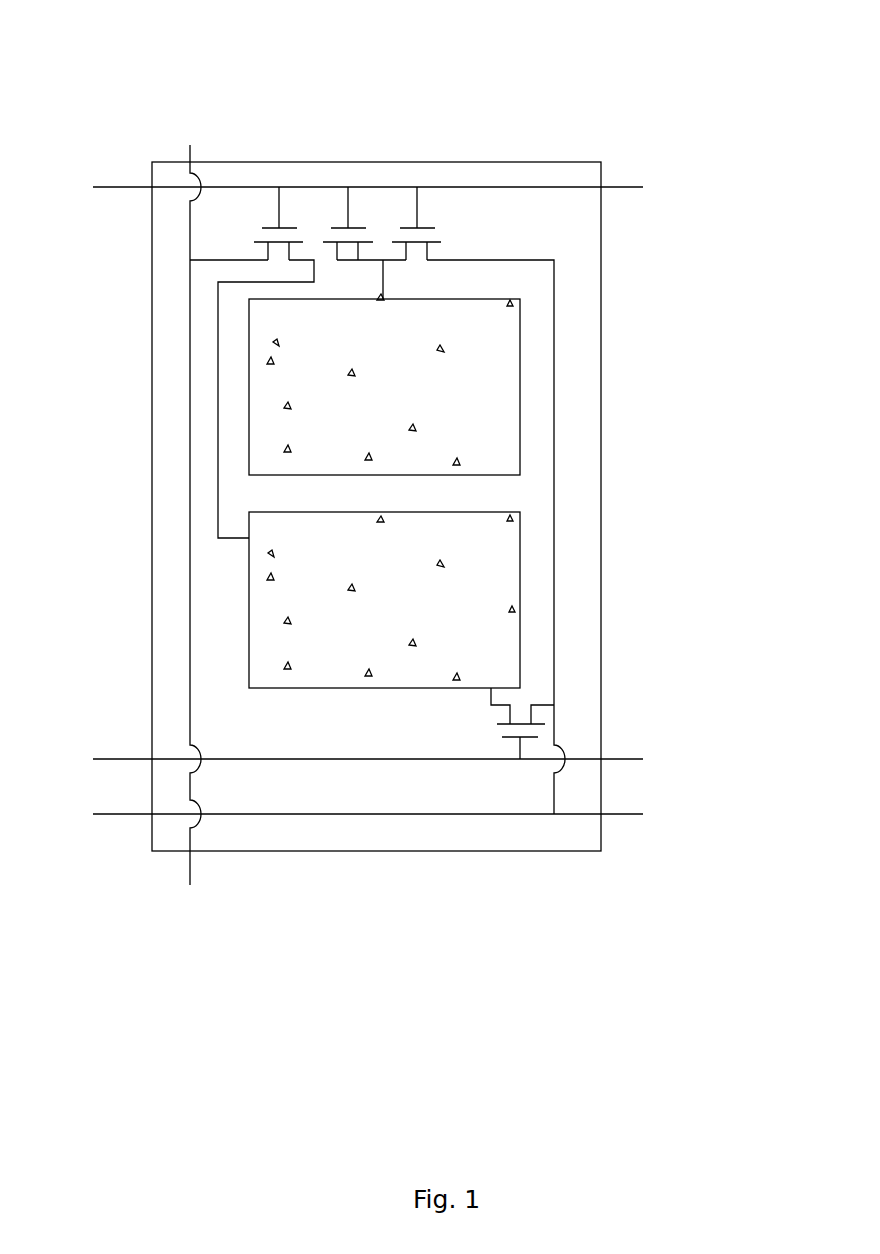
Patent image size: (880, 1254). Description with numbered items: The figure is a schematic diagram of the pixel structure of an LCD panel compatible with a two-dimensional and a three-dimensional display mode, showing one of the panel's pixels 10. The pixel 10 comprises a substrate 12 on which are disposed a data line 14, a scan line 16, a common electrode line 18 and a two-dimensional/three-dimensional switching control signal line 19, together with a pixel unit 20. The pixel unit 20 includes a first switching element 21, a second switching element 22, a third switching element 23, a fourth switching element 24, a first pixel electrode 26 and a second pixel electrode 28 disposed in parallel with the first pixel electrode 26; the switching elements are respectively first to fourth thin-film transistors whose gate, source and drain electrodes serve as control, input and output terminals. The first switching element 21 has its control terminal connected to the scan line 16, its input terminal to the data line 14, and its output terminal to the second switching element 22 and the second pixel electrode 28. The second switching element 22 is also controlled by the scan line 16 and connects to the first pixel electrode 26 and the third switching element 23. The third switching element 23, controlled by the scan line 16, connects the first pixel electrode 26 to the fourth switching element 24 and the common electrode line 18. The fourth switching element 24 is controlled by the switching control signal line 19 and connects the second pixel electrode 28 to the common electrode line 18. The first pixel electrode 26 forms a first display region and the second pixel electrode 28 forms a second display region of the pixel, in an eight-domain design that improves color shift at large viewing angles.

The pixel 10 is at (193, 105).
The substrate 12 is at (477, 162).
The data line 14 is at (189, 434).
The scan line 16 is at (142, 187).
The common electrode line 18 is at (298, 815).
The 2D/3D switching control signal line 19 is at (413, 760).
The pixel unit 20 is at (477, 493).
The first switching element 21 is at (287, 233).
The second switching element 22 is at (338, 235).
The third switching element 23 is at (417, 247).
The fourth switching element 24 is at (588, 703).
The first pixel electrode 26 is at (520, 418).
The second pixel electrode 28 is at (520, 598).